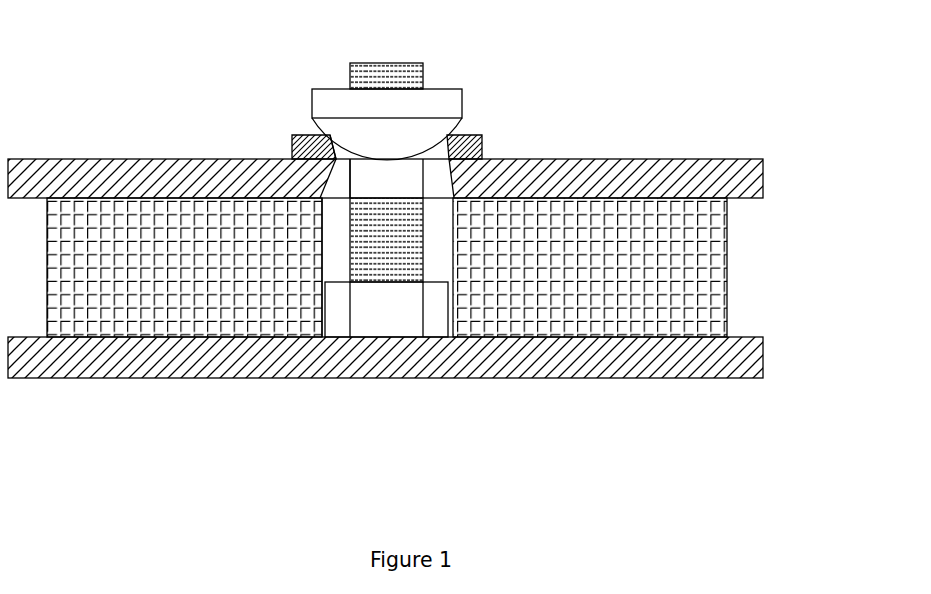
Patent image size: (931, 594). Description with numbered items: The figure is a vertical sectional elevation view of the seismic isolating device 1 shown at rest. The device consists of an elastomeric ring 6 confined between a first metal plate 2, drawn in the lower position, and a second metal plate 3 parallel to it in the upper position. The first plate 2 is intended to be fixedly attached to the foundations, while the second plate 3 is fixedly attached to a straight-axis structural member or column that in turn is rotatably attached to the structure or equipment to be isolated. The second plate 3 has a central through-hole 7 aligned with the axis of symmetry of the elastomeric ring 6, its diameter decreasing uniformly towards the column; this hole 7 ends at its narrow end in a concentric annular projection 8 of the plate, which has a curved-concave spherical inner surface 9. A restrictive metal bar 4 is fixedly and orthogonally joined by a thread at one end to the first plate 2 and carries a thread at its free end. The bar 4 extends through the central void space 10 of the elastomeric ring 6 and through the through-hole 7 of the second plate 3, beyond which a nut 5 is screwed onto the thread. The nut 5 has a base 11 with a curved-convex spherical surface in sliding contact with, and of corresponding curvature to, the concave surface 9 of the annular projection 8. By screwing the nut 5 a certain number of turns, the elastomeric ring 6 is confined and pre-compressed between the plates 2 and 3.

The seismic isolating device 1 is at (412, 233).
The first metal plate 2 is at (385, 380).
The second metal plate 3 is at (393, 142).
The restrictive metal bar 4 is at (403, 312).
The nut 5 is at (426, 104).
The elastomeric ring 6 is at (660, 267).
The central through-hole 7 is at (509, 139).
The concentric annular projection 8 is at (268, 132).
The curved-concave spherical inner surface 9 is at (313, 93).
The central void space 10 is at (198, 223).
The base 11 is at (368, 102).